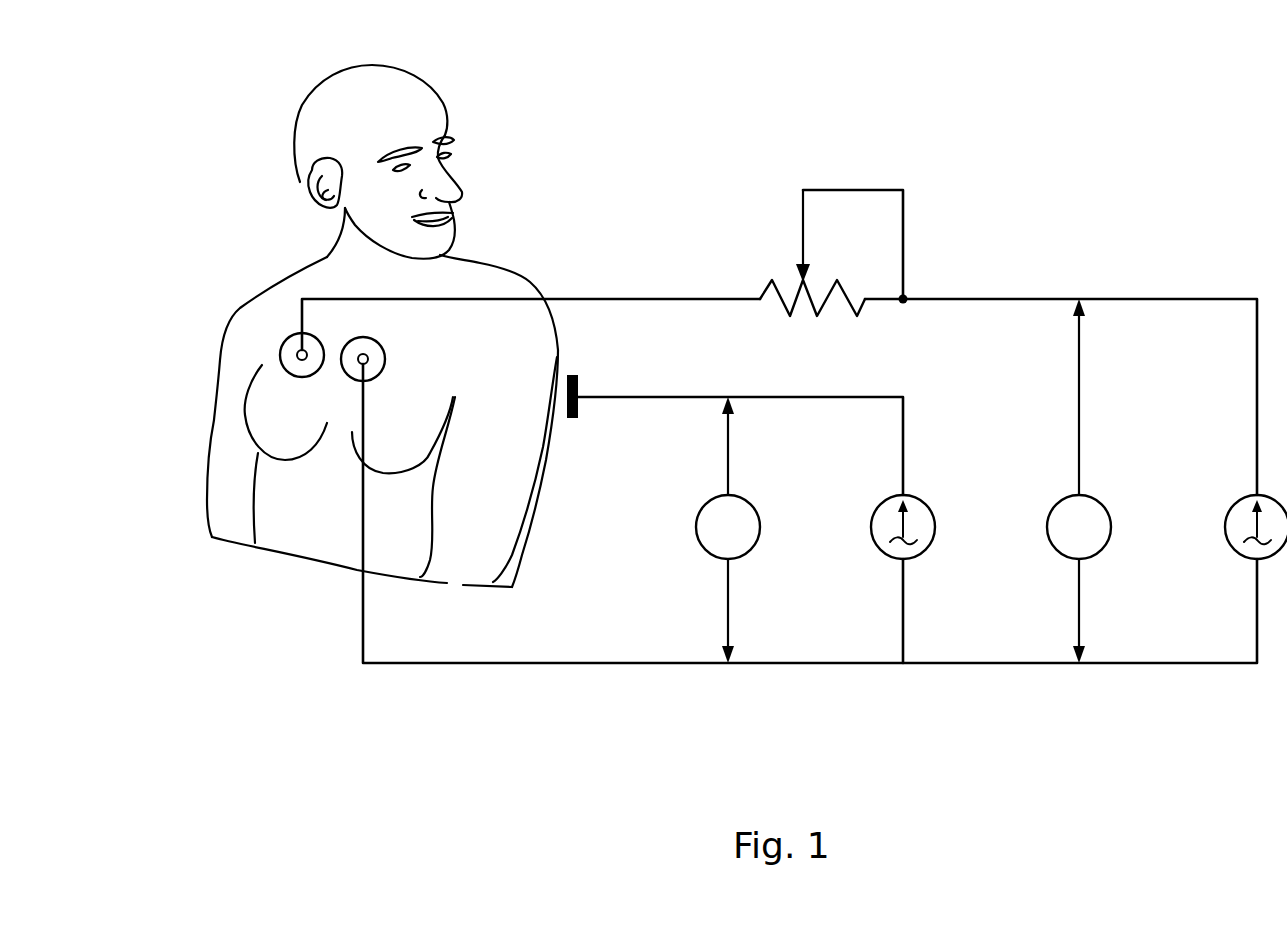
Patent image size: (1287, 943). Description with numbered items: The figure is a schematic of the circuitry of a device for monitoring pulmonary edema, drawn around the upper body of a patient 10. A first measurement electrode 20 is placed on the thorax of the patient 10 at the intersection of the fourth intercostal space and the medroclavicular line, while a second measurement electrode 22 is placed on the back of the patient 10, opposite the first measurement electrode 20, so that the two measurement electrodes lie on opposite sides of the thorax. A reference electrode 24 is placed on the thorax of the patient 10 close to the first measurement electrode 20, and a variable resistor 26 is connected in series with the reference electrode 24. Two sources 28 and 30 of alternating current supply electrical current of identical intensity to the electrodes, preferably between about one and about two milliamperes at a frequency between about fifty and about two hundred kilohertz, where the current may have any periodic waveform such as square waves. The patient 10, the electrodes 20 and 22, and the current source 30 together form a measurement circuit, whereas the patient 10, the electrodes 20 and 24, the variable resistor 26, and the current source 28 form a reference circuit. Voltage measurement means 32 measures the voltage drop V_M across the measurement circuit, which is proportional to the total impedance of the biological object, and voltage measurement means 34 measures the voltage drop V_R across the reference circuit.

The patient 10 is at (307, 522).
The first measurement electrode 20 is at (385, 347).
The second measurement electrode 22 is at (578, 375).
The reference electrode 24 is at (290, 350).
The variable resistor 26 is at (843, 290).
The source of alternating current 28 is at (1247, 557).
The source of alternating current 30 is at (890, 560).
The voltage measurement means 32 is at (715, 560).
The voltage measurement means 34 is at (1068, 557).